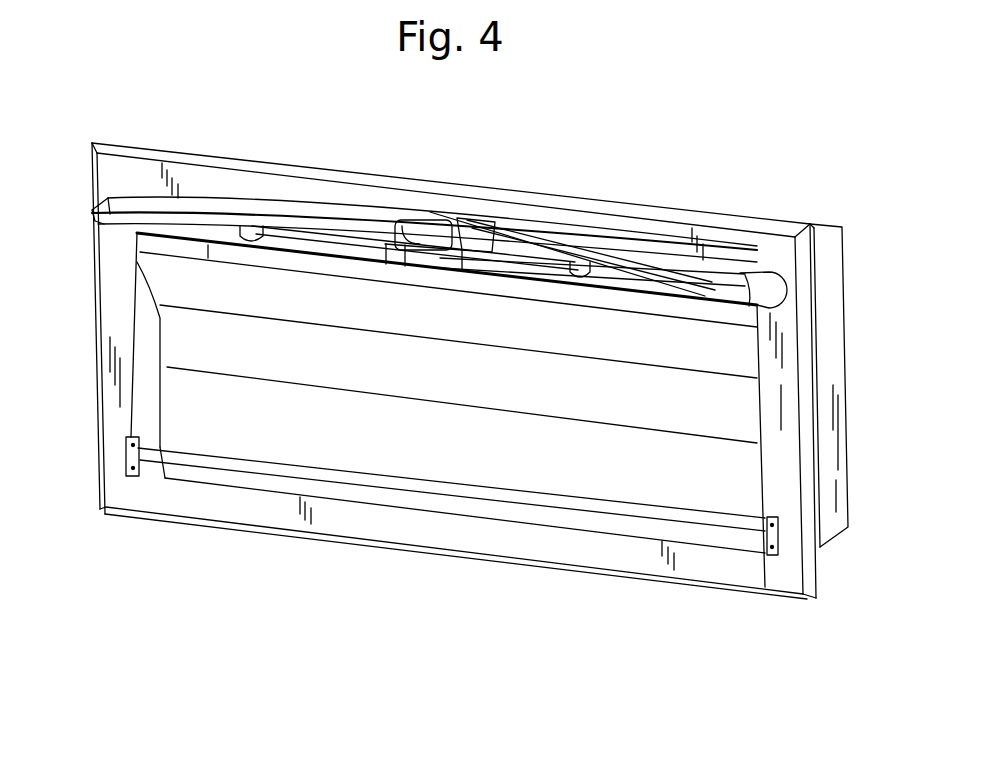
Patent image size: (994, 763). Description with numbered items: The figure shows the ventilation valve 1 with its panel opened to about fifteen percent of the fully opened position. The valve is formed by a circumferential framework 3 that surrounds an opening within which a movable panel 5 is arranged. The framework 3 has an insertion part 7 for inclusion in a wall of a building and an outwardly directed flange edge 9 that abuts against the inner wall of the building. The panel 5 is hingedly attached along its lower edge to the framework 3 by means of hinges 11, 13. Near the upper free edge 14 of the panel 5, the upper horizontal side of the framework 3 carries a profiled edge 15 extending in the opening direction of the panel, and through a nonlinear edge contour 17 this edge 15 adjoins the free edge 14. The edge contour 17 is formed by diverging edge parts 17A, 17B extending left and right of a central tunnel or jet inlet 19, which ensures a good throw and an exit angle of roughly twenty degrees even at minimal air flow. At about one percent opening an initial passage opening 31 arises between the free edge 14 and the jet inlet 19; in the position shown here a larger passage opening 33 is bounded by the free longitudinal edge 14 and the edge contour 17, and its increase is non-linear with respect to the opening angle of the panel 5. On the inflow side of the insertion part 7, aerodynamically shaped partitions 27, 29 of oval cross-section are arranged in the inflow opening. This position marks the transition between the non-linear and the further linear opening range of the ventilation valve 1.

The ventilation valve 1 is at (352, 564).
The circumferential framework 3 is at (210, 528).
The movable panel 5 is at (461, 378).
The insertion part 7 is at (840, 457).
The flange edge 9 is at (813, 571).
The hinge 11 is at (128, 470).
The hinge 13 is at (770, 540).
The upper free edge 14 is at (515, 287).
The profiled edge 15 is at (177, 197).
The nonlinear edge contour 17 is at (290, 240).
The diverging edge part 17A is at (252, 237).
The diverging edge part 17B is at (588, 270).
The jet inlet 19 is at (422, 228).
The partition 27 is at (628, 285).
The partition 29 is at (390, 257).
The initial passage opening 31 is at (462, 238).
The passage opening 33 is at (467, 267).